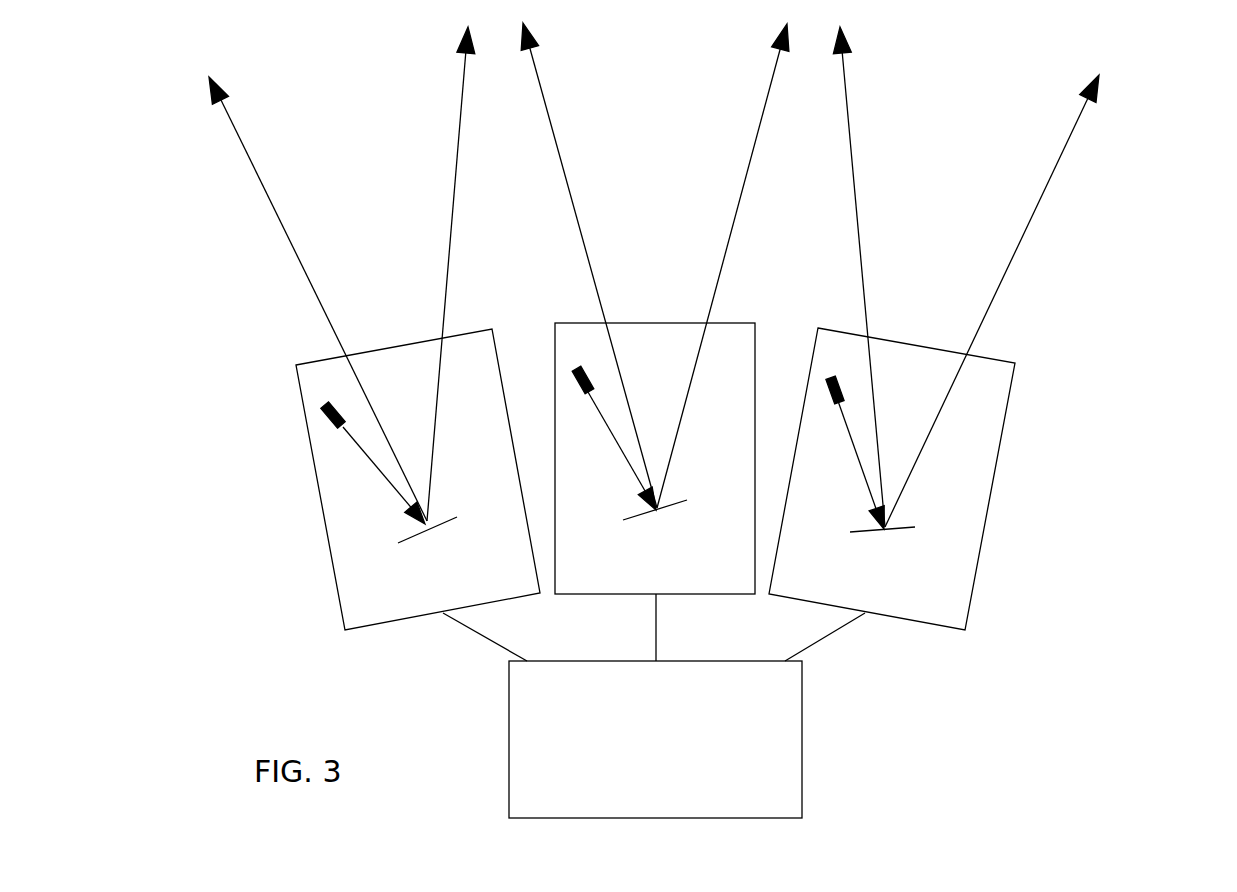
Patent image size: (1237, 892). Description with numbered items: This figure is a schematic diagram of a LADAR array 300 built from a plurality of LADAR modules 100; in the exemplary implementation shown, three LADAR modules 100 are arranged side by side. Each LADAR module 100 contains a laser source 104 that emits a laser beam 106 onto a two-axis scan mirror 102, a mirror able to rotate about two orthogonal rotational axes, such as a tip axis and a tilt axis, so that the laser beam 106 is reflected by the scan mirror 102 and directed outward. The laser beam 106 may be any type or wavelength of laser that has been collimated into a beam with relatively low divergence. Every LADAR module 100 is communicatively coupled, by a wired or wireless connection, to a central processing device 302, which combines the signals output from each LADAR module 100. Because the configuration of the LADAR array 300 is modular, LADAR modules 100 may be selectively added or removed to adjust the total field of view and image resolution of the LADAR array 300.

The LADAR array 300 is at (1140, 218).
The central processing device 302 is at (664, 746).
The LADAR module 100 is at (475, 330).
The two-axis scan mirror 102 is at (442, 524).
The laser source 104 is at (326, 416).
The laser beam 106 is at (398, 502).